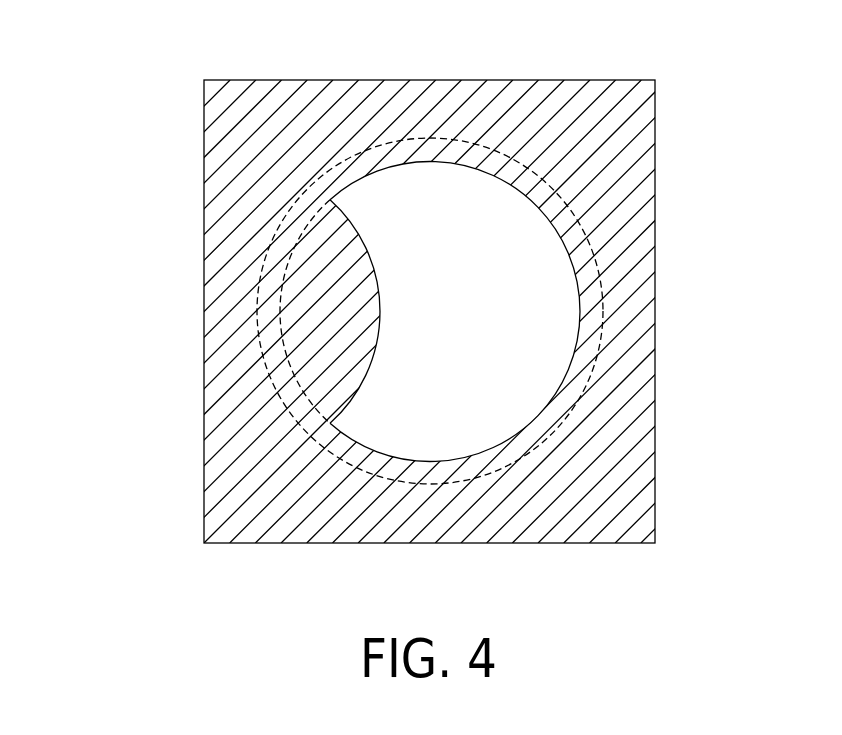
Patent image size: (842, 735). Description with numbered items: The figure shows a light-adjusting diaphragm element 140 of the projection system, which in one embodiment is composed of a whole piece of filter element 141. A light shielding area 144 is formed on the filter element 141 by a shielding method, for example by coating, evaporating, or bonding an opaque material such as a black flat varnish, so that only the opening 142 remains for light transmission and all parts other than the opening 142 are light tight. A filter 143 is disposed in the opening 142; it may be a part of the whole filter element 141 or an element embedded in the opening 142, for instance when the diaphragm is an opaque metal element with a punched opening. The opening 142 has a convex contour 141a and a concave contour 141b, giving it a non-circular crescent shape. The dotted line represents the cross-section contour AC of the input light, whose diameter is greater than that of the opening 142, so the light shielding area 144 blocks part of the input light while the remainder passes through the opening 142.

The light-adjusting diaphragm element 140 is at (160, 45).
The filter element 141 is at (655, 509).
The convex contour 141a is at (548, 218).
The concave contour 141b is at (372, 370).
The opening 142 is at (483, 233).
The filter 143 is at (481, 328).
The light shielding area 144 is at (236, 217).
The cross-section contour of the input light AC is at (603, 303).